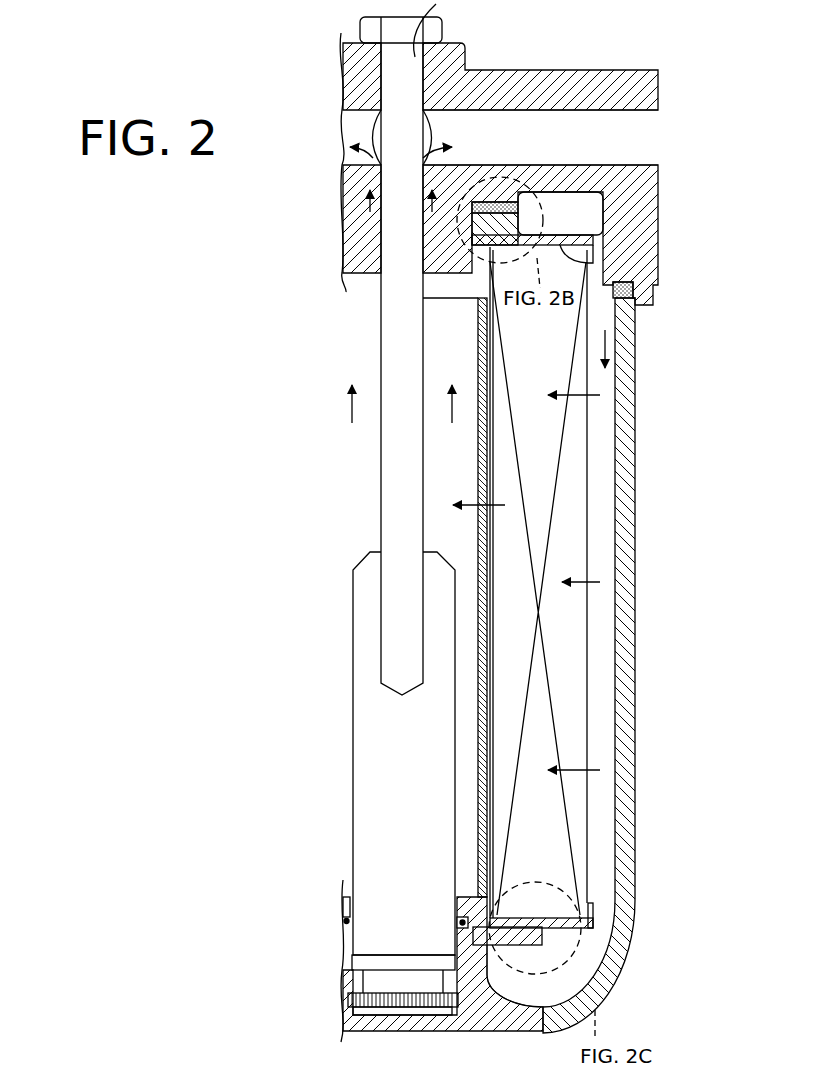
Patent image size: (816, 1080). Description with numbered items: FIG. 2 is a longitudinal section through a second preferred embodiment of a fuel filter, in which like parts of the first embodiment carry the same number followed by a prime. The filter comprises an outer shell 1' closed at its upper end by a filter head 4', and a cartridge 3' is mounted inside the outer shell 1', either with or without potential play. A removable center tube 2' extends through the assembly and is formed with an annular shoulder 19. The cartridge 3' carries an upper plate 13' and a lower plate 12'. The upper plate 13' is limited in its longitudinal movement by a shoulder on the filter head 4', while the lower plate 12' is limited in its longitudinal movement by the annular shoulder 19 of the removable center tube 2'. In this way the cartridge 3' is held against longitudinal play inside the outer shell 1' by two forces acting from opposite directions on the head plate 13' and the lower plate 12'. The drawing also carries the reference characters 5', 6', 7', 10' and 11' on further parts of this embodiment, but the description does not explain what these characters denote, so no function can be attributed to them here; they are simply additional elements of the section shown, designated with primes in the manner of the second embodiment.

The outer shell 1' is at (603, 665).
The removable center tube 2' is at (443, 973).
The cartridge 3' is at (628, 576).
The filter head 4' is at (540, 172).
The valve element 5' is at (580, 219).
The flow passage 6' is at (447, 126).
The chamber 7' is at (555, 136).
The piston 10' is at (403, 809).
The filter element 11' is at (586, 587).
The lower plate 12' is at (575, 940).
The upper plate 13' is at (586, 254).
The annular shoulder 19 is at (590, 978).